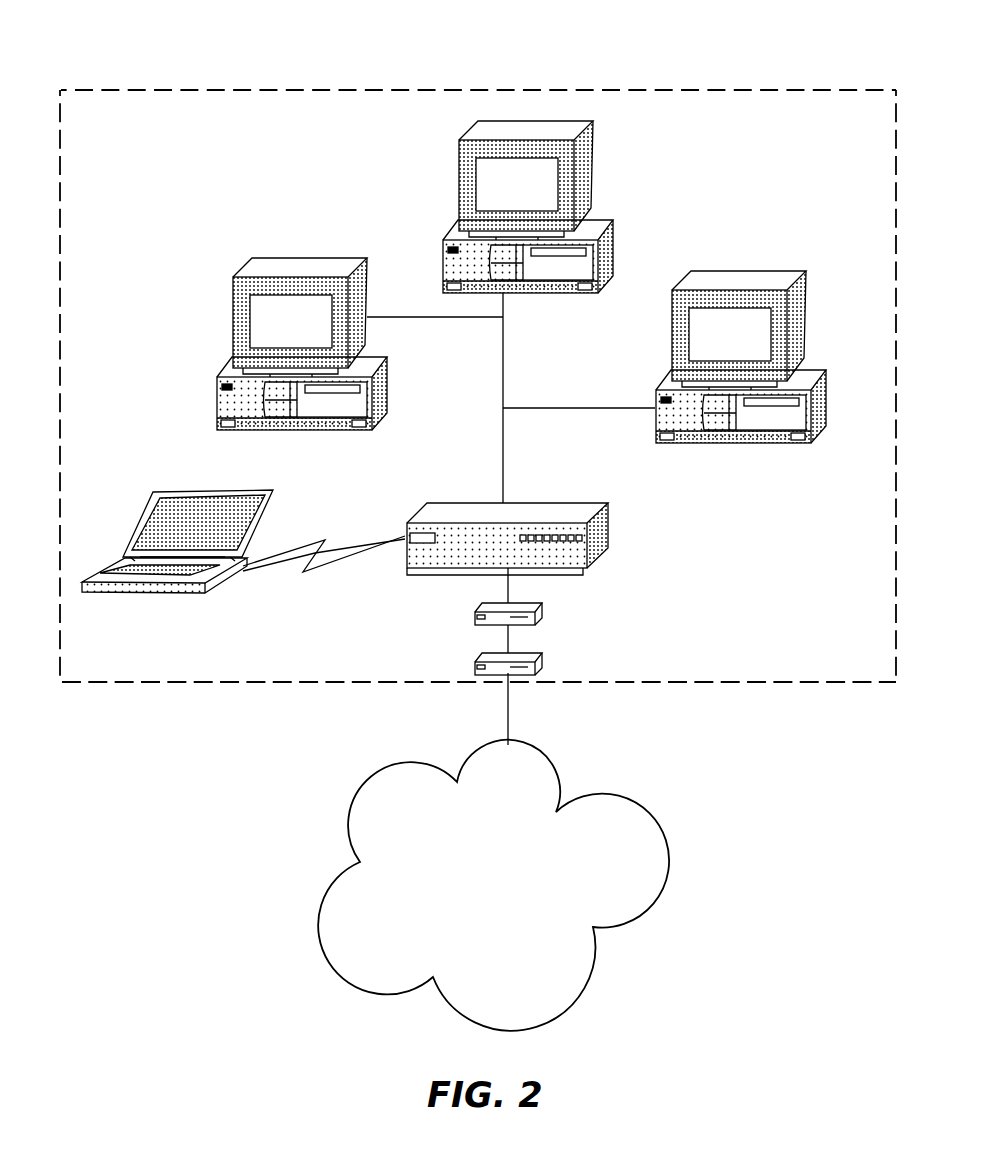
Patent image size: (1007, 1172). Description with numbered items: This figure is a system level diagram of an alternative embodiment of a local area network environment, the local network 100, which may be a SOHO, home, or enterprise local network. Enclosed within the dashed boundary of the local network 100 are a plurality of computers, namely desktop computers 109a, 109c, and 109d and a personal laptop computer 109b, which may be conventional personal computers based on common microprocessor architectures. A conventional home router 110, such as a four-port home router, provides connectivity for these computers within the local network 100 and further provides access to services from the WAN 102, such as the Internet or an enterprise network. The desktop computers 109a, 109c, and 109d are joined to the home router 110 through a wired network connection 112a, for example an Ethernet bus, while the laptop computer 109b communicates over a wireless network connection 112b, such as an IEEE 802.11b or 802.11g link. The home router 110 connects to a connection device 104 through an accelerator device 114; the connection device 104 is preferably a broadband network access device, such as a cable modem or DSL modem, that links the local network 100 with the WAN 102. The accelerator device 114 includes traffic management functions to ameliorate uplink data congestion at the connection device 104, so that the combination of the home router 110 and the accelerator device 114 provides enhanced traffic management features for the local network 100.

The local network 100 is at (590, 87).
The WAN 102 is at (479, 916).
The connection device 104 is at (542, 657).
The computer 109a is at (300, 270).
The personal laptop computer 109b is at (203, 490).
The computer 109c is at (740, 280).
The computer 109d is at (455, 167).
The home router 110 is at (600, 533).
The wired network connection 112a is at (503, 363).
The wireless network connection 112b is at (307, 547).
The accelerator device 114 is at (542, 607).